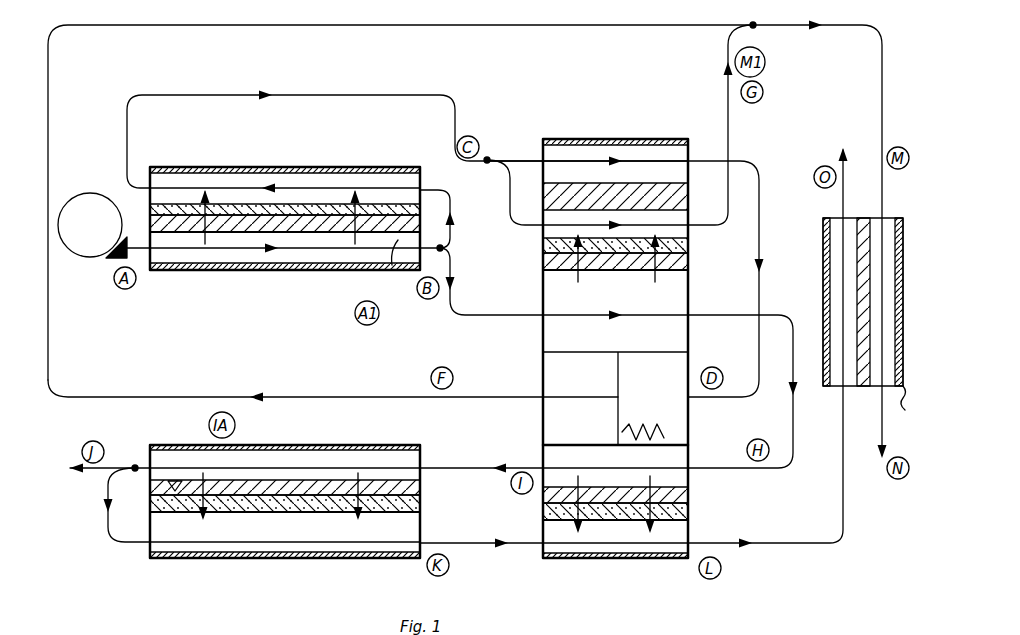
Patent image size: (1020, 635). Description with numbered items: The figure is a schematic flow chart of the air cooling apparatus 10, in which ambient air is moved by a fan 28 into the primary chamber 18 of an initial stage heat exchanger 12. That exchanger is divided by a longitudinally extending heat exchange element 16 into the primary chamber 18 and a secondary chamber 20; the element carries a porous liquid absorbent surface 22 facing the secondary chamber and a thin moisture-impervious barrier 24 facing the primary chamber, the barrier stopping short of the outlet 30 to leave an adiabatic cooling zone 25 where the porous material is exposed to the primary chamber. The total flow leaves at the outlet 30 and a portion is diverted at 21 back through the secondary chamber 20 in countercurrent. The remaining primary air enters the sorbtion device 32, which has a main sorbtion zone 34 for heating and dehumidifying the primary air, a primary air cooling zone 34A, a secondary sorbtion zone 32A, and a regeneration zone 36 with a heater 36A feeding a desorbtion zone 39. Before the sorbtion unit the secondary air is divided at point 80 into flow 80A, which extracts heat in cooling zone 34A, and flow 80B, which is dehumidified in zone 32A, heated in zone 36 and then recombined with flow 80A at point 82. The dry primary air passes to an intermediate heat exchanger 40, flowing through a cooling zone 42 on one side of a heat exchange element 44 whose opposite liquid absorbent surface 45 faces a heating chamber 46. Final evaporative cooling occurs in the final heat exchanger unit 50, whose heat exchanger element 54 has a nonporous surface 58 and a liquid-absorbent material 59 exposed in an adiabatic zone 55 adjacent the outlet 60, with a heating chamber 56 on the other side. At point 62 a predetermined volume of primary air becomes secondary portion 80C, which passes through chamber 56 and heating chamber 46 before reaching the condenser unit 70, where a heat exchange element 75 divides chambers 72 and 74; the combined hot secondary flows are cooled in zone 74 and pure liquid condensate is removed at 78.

The air cooling apparatus 10 is at (100, 110).
The initial stage heat exchanger 12 is at (310, 167).
The heat exchange element 16 is at (155, 215).
The primary chamber 18 is at (330, 250).
The secondary chamber 20 is at (345, 173).
The diversion point 21 is at (445, 250).
The liquid absorbent surface 22 is at (410, 205).
The moisture-impervious barrier 24 is at (230, 250).
The adiabatic cooling zone 25 is at (398, 240).
The fan 28 is at (90, 252).
The outlet 30 is at (450, 242).
The sorbtion device 32 is at (640, 122).
The secondary sorbtion zone 32A is at (660, 175).
The main sorbtion zone 34 is at (615, 348).
The primary air cooling zone 34A is at (688, 228).
The regeneration zone 36 is at (615, 398).
The heater 36A is at (664, 438).
The desorbtion zone 39 is at (577, 415).
The intermediate heat exchanger 40 is at (675, 458).
The cooling zone 42 is at (556, 456).
The heat exchange element 44 is at (682, 498).
The liquid absorbent surface 45 is at (682, 512).
The heating chamber 46 is at (682, 534).
The final heat exchanger unit 50 is at (440, 452).
The heat exchanger element 54 is at (228, 500).
The adiabatic zone 55 is at (160, 487).
The heating chamber 56 is at (285, 507).
The nonporous surface 58 is at (422, 486).
The liquid-absorbent material 59 is at (330, 500).
The outlet 60 is at (97, 476).
The redirection point 62 is at (135, 466).
The condenser unit 70 is at (812, 225).
The condenser chamber 72 is at (830, 260).
The condenser cooling zone 74 is at (897, 228).
The heat exchange element 75 is at (864, 386).
The condensate removal point 78 is at (905, 410).
The division point 80 is at (489, 158).
The secondary air portion 80A is at (522, 222).
The secondary air portion 80B is at (520, 160).
The secondary air portion 80C is at (132, 543).
The combination point 82 is at (752, 35).